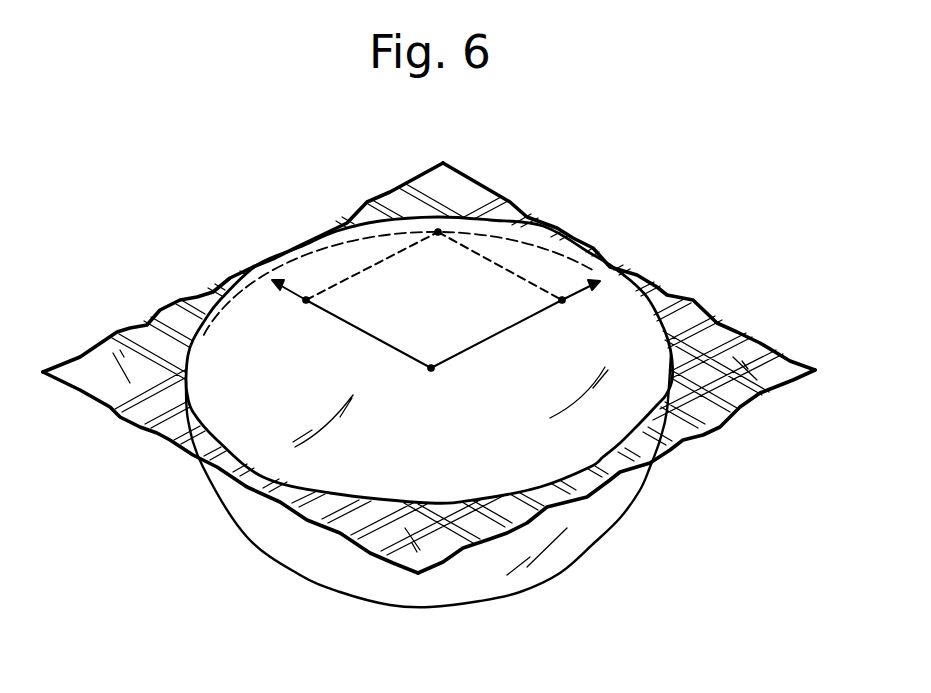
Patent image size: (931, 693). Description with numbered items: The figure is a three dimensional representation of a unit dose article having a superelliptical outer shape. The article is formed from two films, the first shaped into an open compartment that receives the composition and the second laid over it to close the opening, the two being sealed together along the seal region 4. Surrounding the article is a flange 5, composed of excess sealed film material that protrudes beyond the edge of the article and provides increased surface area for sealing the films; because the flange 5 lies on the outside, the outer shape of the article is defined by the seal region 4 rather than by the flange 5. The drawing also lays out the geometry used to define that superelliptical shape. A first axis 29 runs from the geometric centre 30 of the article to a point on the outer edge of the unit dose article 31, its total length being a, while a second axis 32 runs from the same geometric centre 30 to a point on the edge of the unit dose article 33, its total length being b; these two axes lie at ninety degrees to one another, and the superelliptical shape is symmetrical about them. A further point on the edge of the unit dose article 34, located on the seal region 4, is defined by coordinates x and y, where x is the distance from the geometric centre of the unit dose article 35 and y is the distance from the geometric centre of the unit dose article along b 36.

The seal region 4 is at (570, 505).
The flange 5 is at (775, 357).
The first axis 29 is at (527, 323).
The geometric centre 30 is at (431, 368).
The point on the outer edge of the unit dose article 31 is at (608, 280).
The second axis 32 is at (335, 318).
The point on the edge of the unit dose article 33 is at (268, 278).
The point on the edge of the unit dose article 34 is at (438, 232).
The distance from the geometric centre of the unit dose article 35 is at (503, 265).
The distance from the geometric centre of the unit dose article along b 36 is at (367, 267).